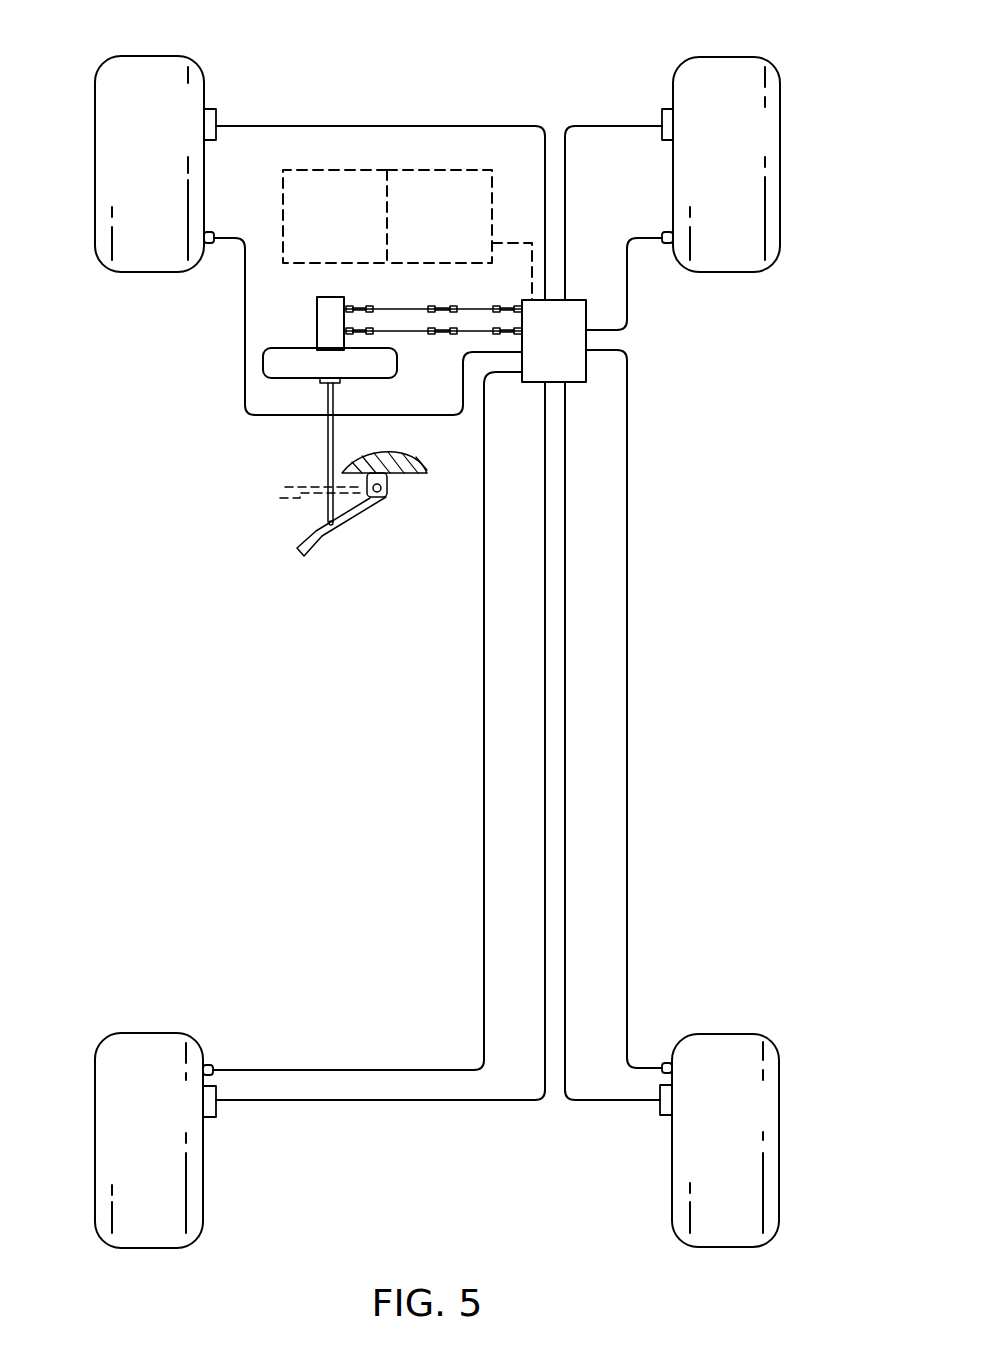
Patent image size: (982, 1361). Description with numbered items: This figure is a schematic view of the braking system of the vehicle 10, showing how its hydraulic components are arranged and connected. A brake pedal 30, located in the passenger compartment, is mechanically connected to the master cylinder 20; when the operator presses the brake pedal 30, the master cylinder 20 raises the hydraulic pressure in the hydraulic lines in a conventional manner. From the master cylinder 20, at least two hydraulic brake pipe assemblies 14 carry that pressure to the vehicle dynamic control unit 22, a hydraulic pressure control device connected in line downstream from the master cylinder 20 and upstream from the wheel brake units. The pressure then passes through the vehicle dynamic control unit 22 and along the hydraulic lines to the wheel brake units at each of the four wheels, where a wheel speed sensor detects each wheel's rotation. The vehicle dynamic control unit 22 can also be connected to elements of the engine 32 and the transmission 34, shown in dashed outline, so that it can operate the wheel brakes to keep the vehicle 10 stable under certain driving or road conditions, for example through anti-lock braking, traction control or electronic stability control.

The vehicle 10 is at (541, 41).
The vehicle dynamic control unit 22 is at (584, 296).
The master cylinder 20 is at (317, 316).
The hydraulic brake pipe assembly 14 is at (375, 306).
The engine 32 is at (327, 207).
The transmission 34 is at (442, 193).
The brake pedal 30 is at (312, 548).